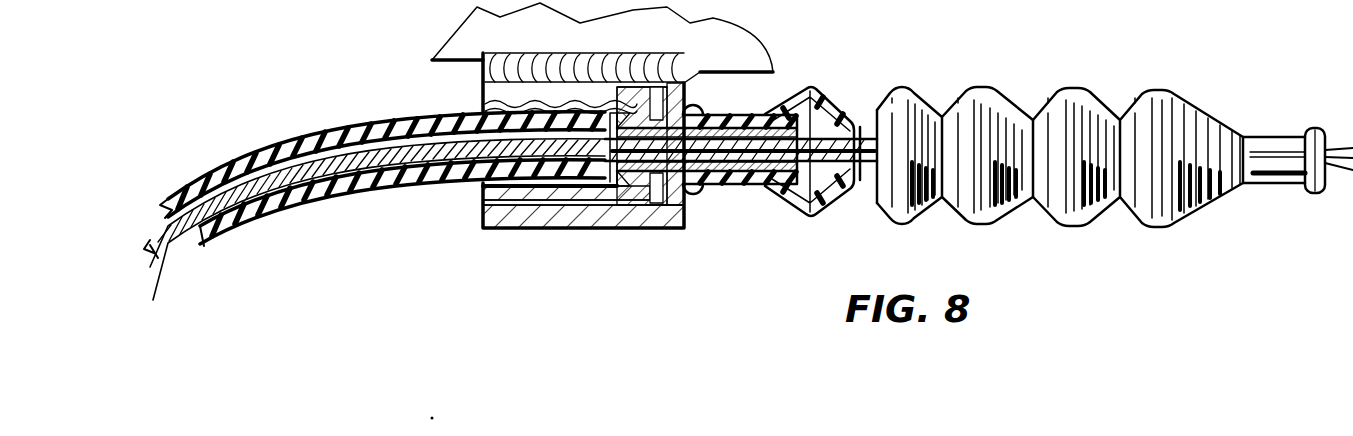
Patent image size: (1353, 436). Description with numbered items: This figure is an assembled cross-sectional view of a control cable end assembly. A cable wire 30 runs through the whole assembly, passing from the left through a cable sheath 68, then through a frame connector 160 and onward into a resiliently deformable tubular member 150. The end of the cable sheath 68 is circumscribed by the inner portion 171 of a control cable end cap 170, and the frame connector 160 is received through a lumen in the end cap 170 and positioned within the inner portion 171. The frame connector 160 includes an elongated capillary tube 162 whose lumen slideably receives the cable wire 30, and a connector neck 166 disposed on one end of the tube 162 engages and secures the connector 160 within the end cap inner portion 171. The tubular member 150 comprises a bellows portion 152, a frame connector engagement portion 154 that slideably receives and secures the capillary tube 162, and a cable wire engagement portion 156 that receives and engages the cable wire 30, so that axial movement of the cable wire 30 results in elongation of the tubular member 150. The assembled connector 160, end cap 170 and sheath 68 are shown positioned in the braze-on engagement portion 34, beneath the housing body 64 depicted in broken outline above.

The cable wire 30 is at (180, 247).
The housing block 34 is at (611, 230).
The body housing 64 is at (723, 40).
The cable sheath 68 is at (262, 153).
The resiliently deformable tubular member 150 is at (985, 88).
The bellows portion 152 is at (1100, 88).
The frame connector engagement portion 154 is at (737, 110).
The cable wire engagement portion 156 is at (1288, 137).
The frame connector 160 is at (792, 204).
The elongated capillary tube 162 is at (731, 186).
The connector neck 166 is at (636, 170).
The end cap 170 is at (478, 186).
The inner portion 171 is at (490, 111).